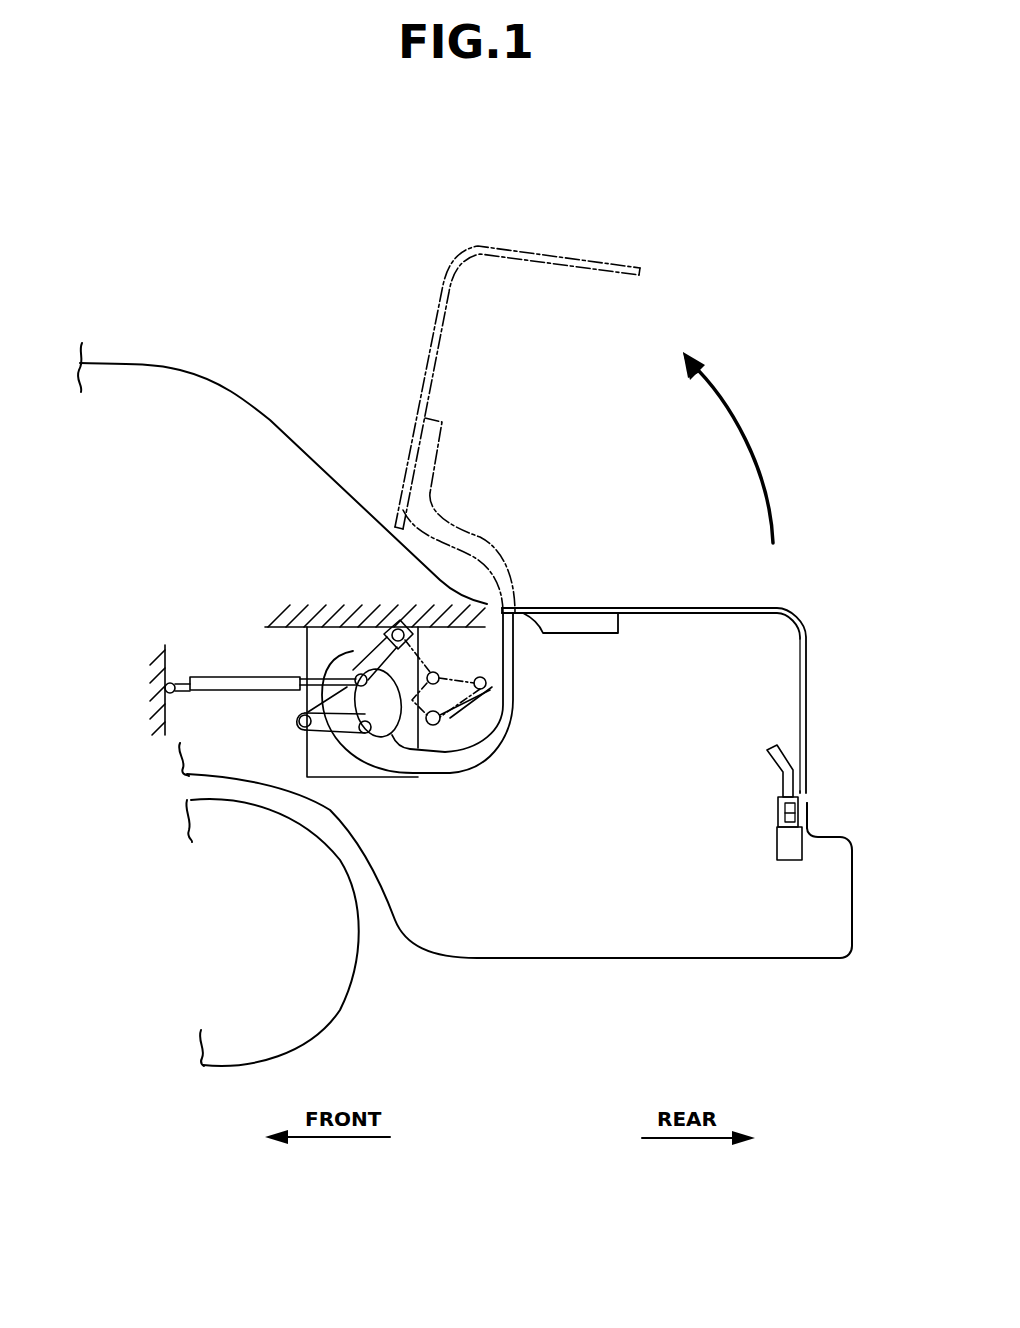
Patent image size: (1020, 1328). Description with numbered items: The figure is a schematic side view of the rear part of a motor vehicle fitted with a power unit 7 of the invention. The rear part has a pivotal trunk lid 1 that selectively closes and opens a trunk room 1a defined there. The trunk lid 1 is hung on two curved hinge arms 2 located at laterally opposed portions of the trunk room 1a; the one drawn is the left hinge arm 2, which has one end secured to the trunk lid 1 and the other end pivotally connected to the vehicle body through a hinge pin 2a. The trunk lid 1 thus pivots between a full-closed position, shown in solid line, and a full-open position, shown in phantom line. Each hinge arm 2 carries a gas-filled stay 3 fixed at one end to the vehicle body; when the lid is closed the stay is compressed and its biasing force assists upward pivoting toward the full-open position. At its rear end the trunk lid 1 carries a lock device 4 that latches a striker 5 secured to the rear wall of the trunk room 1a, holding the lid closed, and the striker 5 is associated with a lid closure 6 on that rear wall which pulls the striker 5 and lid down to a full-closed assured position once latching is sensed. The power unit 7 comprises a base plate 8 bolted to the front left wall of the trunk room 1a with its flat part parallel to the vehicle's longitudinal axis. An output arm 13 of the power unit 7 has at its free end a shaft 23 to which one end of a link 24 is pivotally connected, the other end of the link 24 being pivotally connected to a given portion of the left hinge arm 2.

The trunk lid 1 is at (437, 335).
The trunk room 1a is at (733, 710).
The hinge arm 2 is at (512, 558).
The hinge pin 2a is at (395, 625).
The gas-filled stay 3 is at (246, 676).
The lock device 4 is at (787, 753).
The striker 5 is at (777, 812).
The lid closure 6 is at (777, 843).
The power unit 7 is at (392, 790).
The base plate 8 is at (320, 768).
The output arm 13 is at (313, 703).
The shaft 23 is at (297, 727).
The link 24 is at (500, 733).